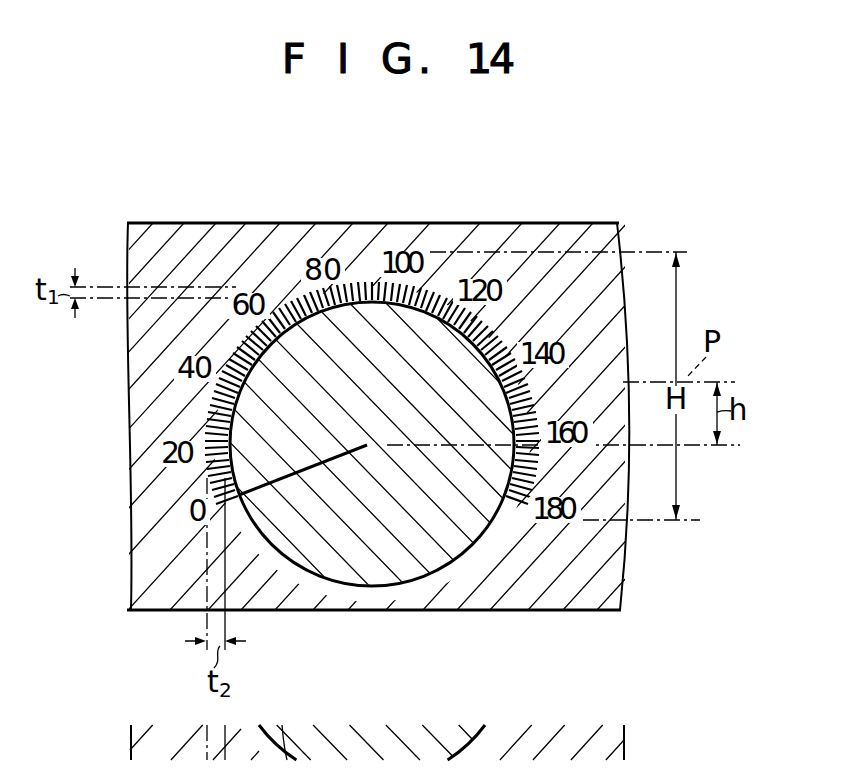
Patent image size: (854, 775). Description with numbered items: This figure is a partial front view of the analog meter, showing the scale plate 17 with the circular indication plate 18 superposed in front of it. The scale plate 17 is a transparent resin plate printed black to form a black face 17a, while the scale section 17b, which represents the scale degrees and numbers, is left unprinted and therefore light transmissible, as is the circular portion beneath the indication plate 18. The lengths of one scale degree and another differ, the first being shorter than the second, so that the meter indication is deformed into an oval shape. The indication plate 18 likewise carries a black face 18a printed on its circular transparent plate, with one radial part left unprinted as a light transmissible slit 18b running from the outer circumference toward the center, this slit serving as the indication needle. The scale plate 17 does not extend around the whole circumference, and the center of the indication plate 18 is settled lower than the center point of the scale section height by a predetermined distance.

The scale plate 17 is at (540, 223).
The black face 17a is at (235, 237).
The scale section 17b is at (355, 290).
The indication plate 18 is at (438, 572).
The black face 18a is at (377, 552).
The light transmissible slit 18b is at (290, 467).